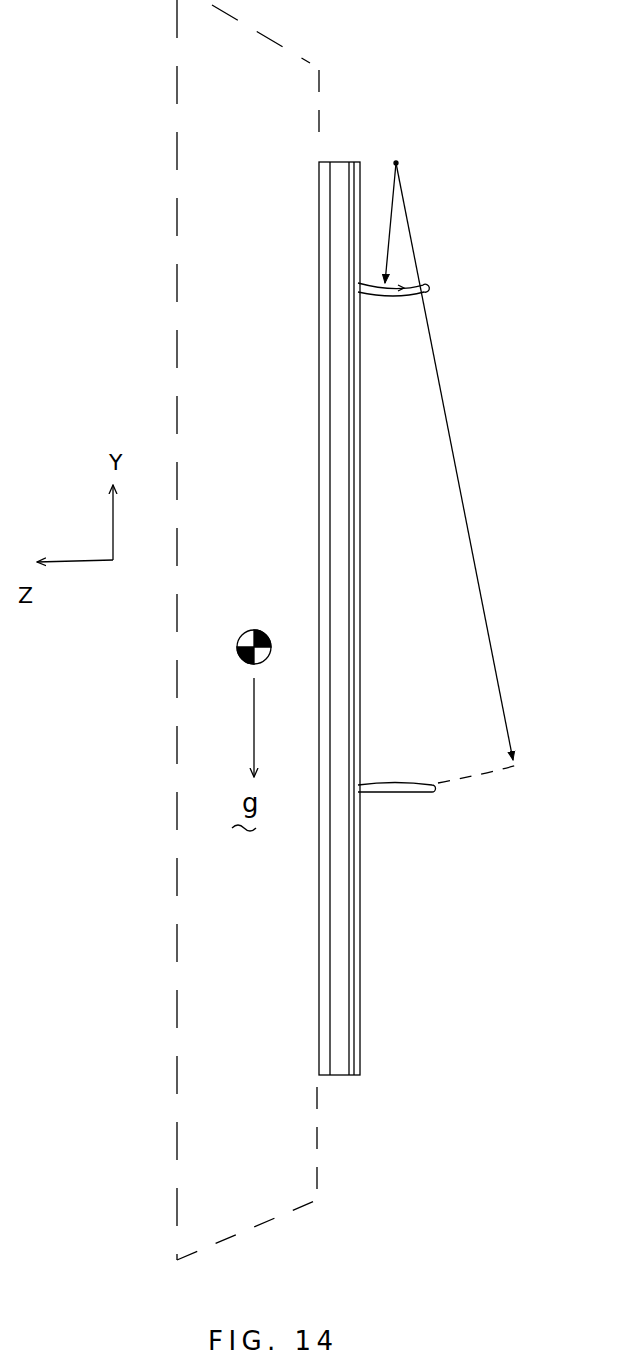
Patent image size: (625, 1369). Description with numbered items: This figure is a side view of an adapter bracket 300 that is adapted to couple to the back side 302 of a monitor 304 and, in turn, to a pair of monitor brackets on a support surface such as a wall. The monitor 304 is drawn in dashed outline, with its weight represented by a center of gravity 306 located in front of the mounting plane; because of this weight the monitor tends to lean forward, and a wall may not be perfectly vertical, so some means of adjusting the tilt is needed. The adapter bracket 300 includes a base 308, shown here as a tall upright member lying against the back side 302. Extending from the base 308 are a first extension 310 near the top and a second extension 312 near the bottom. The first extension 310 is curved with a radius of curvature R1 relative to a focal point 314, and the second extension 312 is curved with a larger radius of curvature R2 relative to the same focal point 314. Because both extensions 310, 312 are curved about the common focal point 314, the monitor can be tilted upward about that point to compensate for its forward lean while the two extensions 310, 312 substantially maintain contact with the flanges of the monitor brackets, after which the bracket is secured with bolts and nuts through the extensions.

The adapter bracket 300 is at (447, 645).
The back side 302 is at (321, 118).
The monitor 304 is at (190, 1101).
The center of gravity 306 is at (230, 651).
The base 308 is at (337, 532).
The first extension 310 is at (383, 298).
The second extension 312 is at (400, 797).
The focal point 314 is at (398, 162).
The radius of curvature R1 is at (390, 238).
The radius of curvature R2 is at (478, 588).